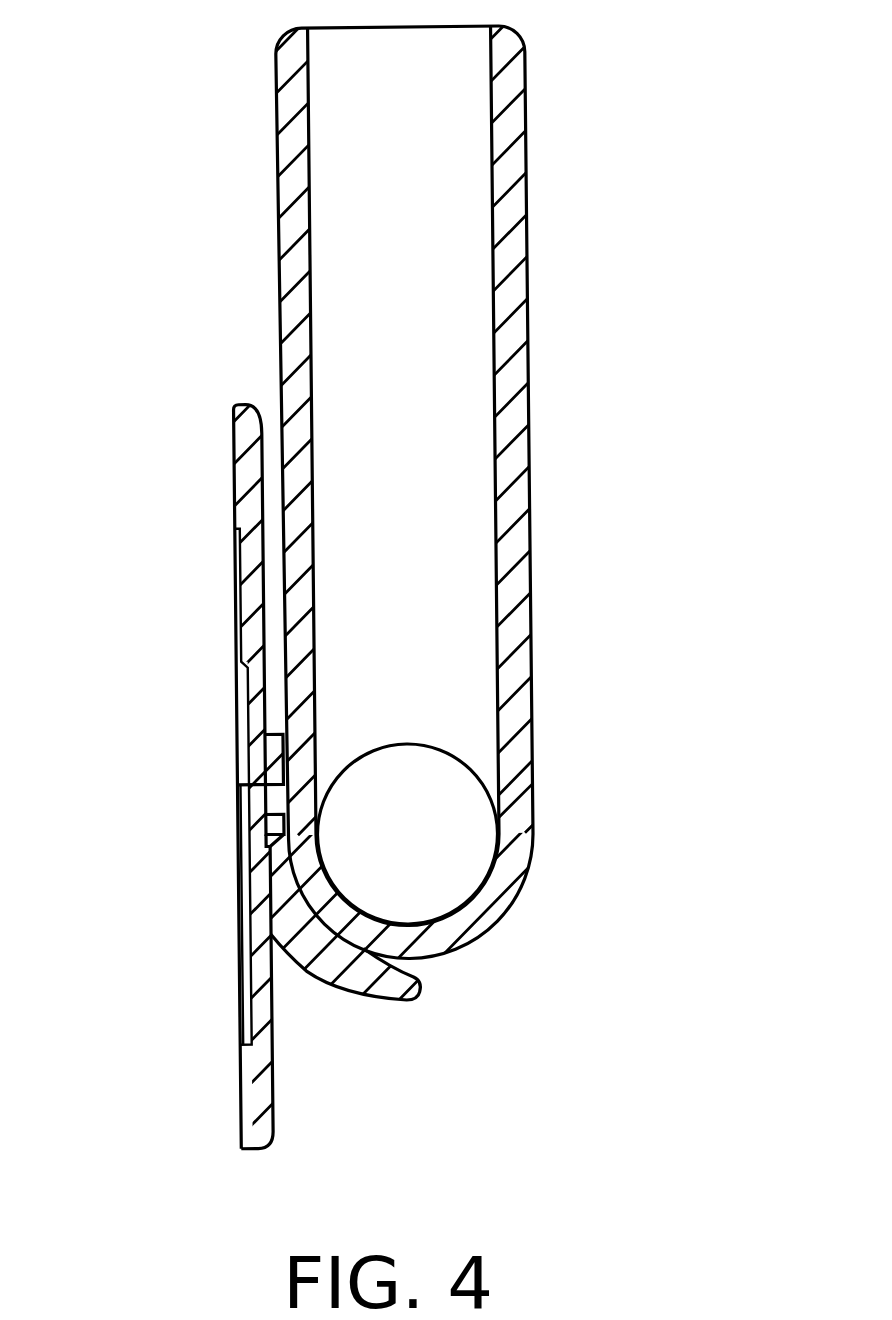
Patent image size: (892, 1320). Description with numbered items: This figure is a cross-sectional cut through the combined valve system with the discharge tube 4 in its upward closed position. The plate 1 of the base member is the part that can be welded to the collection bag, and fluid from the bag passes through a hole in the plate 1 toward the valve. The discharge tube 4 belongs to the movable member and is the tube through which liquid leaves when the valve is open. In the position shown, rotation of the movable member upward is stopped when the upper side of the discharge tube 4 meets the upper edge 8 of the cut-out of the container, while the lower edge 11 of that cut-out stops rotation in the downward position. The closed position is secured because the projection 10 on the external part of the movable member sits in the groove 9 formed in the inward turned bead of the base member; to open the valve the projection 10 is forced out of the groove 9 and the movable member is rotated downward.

The plate 1 is at (253, 443).
The discharge tube 4 is at (517, 263).
The upper edge 8 is at (258, 786).
The groove 9 is at (270, 858).
The projection 10 is at (268, 833).
The lower edge 11 is at (405, 977).